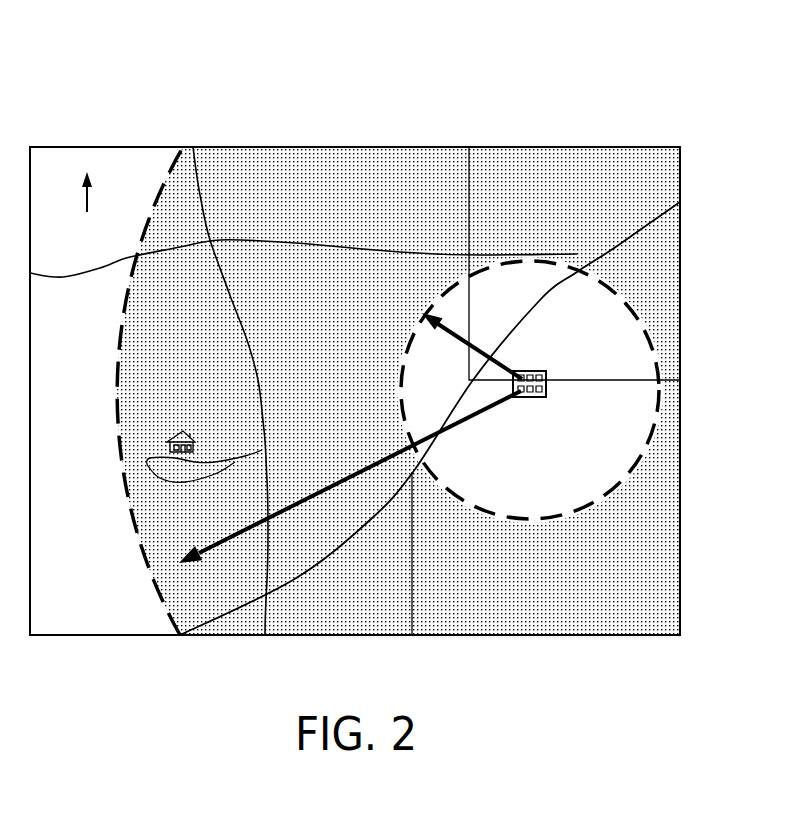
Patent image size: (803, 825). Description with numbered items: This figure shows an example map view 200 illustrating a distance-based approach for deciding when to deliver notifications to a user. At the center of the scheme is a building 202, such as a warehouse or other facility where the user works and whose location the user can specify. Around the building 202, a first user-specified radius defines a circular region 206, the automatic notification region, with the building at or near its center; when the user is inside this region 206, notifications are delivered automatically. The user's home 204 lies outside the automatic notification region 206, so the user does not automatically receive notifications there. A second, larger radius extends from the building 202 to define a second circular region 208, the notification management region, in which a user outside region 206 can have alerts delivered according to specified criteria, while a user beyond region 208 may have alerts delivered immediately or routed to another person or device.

The map view 200 is at (661, 104).
The building 202 is at (523, 398).
The home 204 is at (174, 431).
The circular region 206 is at (607, 293).
The second circular region 208 is at (124, 285).